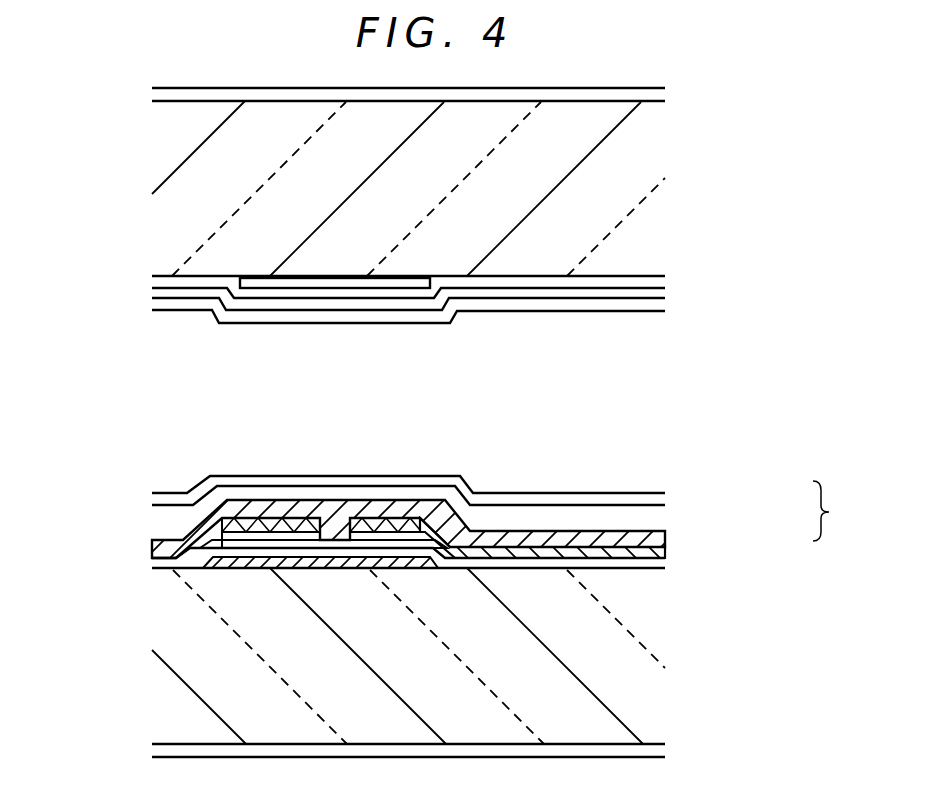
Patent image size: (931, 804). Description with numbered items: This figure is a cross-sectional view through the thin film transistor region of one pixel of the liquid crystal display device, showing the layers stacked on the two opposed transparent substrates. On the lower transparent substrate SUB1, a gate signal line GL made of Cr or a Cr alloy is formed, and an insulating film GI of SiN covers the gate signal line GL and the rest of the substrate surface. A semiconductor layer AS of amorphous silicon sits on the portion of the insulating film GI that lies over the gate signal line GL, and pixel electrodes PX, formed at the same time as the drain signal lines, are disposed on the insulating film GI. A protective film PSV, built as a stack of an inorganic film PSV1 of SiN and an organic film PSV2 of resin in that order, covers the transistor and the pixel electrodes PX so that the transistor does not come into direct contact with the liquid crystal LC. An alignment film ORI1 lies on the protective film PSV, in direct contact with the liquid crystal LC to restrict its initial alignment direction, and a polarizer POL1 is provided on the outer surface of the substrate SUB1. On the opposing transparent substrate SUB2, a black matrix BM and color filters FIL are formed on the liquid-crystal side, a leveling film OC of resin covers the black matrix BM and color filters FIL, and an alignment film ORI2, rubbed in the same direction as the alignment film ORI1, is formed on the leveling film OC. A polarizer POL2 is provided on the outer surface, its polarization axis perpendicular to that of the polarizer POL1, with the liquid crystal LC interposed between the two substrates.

The polarizer POL2 is at (666, 94).
The transparent substrate SUB2 is at (650, 156).
The black matrix BM is at (257, 283).
The color filter FIL is at (667, 277).
The leveling film OC is at (667, 290).
The alignment film ORI2 is at (667, 312).
The liquid crystal LC is at (625, 378).
The alignment film ORI1 is at (165, 492).
The organic film PSV2 is at (667, 506).
The protective film PSV is at (846, 511).
The inorganic film PSV1 is at (667, 533).
The semiconductor layer AS is at (200, 550).
The pixel electrode PX is at (667, 551).
The insulating film GI is at (668, 566).
The gate signal line GL is at (244, 569).
The transparent substrate SUB1 is at (610, 645).
The polarizer POL1 is at (667, 749).